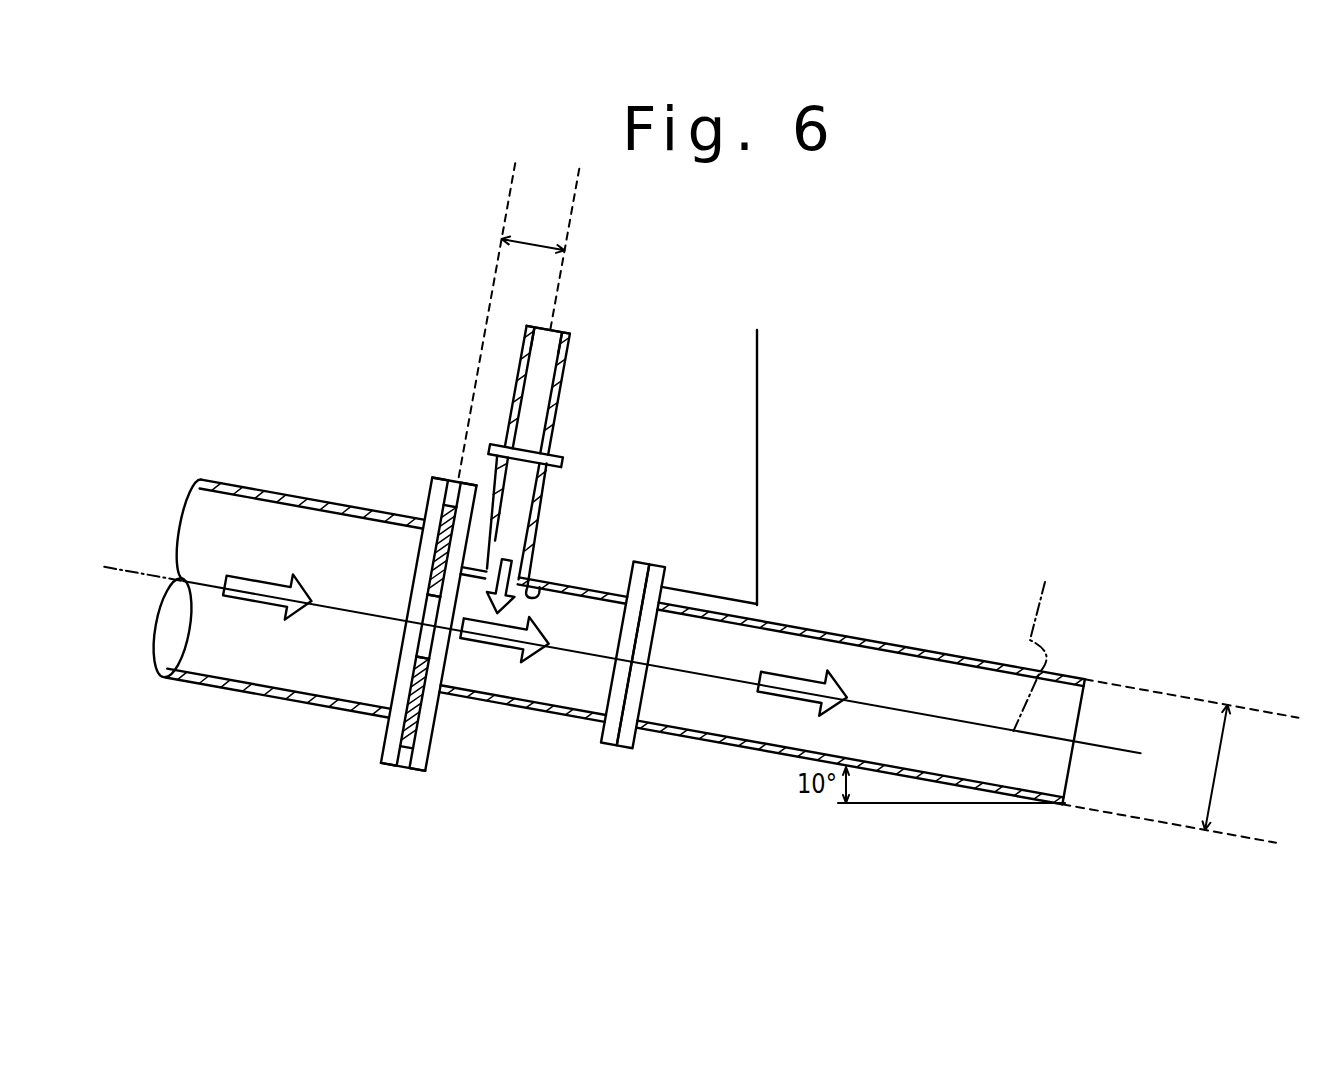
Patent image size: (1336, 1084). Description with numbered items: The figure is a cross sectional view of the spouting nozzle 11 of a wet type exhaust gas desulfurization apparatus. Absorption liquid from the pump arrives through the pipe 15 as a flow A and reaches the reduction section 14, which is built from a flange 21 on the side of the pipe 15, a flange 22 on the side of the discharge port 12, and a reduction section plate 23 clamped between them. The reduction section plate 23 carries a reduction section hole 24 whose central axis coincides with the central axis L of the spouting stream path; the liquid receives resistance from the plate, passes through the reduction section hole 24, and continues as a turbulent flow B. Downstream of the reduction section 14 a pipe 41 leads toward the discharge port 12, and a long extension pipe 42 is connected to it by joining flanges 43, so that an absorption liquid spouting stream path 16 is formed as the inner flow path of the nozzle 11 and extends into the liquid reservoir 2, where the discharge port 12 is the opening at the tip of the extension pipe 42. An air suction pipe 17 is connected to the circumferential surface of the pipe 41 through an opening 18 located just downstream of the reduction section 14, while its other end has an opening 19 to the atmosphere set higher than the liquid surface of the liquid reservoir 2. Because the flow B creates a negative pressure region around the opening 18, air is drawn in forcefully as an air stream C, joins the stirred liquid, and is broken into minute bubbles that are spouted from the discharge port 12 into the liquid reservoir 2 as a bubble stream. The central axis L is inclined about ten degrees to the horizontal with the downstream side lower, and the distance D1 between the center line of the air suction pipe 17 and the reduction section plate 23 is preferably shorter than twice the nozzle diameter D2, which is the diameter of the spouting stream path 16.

The liquid reservoir 2 is at (760, 386).
The nozzle 11 is at (655, 782).
The discharge port 12 is at (1082, 713).
The reduction section 14 is at (433, 809).
The pipe 15 is at (276, 492).
The absorption liquid spouting stream path 16 is at (798, 673).
The air suction pipe 17 is at (515, 377).
The opening 18 is at (548, 578).
The opening 19 is at (553, 330).
The flange 21 is at (388, 733).
The flange 22 is at (427, 760).
The reduction section plate 23 is at (407, 750).
The reduction section hole 24 is at (430, 607).
The pipe 41 is at (593, 585).
The extension pipe 42 is at (905, 640).
The joining flanges 43 is at (613, 738).
The flow A is at (247, 578).
The flow B is at (492, 645).
The air stream C is at (503, 558).
The central axis L is at (1036, 639).
The distance D1 is at (519, 323).
The diameter D2 is at (1232, 767).